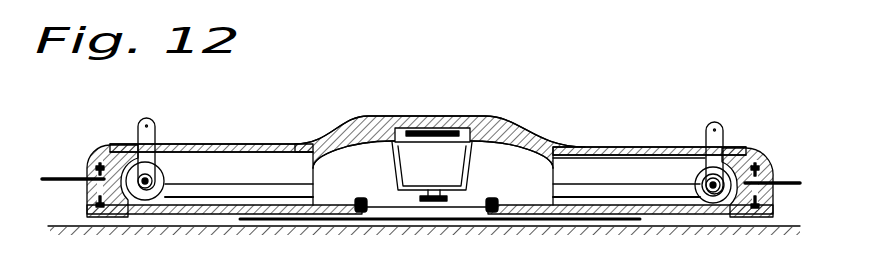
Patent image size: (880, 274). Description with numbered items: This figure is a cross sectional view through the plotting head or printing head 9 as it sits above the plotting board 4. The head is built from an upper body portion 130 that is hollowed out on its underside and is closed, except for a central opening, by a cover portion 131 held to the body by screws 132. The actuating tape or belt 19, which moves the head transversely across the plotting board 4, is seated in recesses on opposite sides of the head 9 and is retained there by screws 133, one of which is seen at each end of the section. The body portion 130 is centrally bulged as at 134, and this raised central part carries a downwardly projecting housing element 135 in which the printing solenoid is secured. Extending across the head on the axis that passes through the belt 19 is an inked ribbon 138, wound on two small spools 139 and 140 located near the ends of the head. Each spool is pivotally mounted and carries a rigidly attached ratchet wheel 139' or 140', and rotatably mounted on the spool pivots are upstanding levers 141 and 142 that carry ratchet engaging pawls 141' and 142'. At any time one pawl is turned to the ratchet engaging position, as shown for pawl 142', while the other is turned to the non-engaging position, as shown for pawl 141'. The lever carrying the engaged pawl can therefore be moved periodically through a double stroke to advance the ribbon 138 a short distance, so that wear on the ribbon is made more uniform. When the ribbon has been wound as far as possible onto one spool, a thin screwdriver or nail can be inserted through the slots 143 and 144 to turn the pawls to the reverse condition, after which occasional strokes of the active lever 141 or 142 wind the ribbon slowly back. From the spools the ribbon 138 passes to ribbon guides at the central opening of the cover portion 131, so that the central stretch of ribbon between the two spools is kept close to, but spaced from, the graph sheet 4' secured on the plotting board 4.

The plotting board 4 is at (421, 248).
The graph sheet 4' is at (434, 242).
The plotting head 9 is at (540, 128).
The actuating belt 19 is at (72, 177).
The body portion 130 is at (574, 147).
The cover portion 131 is at (650, 222).
The screws 132 is at (774, 203).
The screws 133 is at (757, 164).
The central bulge 134 is at (352, 127).
The housing element 135 is at (473, 166).
The inked ribbon 138 is at (223, 192).
The spool 139 is at (162, 179).
The ratchet wheel 139' is at (144, 221).
The spool 140 is at (693, 183).
The ratchet wheel 140' is at (721, 222).
The lever 141 is at (169, 152).
The pawl 141' is at (112, 171).
The lever 142 is at (736, 158).
The pawl 142' is at (668, 182).
The slot 143 is at (178, 148).
The slot 144 is at (688, 153).